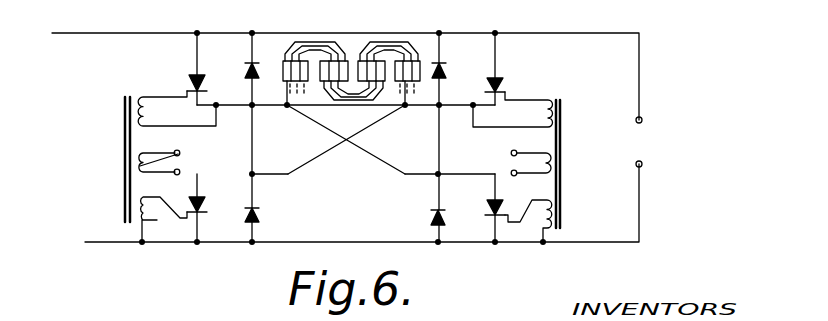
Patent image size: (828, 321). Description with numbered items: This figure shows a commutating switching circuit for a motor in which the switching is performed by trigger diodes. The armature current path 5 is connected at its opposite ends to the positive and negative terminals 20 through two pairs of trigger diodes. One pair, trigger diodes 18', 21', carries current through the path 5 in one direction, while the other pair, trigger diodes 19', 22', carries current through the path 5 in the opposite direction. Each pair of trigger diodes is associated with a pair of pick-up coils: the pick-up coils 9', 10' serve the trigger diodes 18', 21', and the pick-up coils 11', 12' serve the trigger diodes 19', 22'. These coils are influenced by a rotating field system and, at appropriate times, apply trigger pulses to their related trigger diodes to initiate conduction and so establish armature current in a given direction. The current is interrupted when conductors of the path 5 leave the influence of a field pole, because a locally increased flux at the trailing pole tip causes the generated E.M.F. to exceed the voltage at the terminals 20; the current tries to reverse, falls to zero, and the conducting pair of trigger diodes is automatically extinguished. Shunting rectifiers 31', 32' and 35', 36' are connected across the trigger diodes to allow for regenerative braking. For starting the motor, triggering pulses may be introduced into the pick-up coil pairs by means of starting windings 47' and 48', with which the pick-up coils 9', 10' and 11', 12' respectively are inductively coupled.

The armature current path 5 is at (285, 105).
The pick-up coil 9' is at (177, 108).
The pick-up coil 10' is at (164, 219).
The pick-up coil 11' is at (533, 112).
The pick-up coil 12' is at (549, 221).
The trigger diode 18' is at (181, 74).
The trigger diode 19' is at (515, 80).
The positive and negative terminals 20 is at (642, 139).
The trigger diode 21' is at (191, 239).
The trigger diode 22' is at (490, 239).
The shunting rectifier 31' is at (235, 64).
The shunting rectifier 32' is at (266, 220).
The shunting rectifier 35' is at (453, 75).
The shunting rectifier 36' is at (421, 220).
The starting winding 47' is at (175, 162).
The starting winding 48' is at (554, 163).